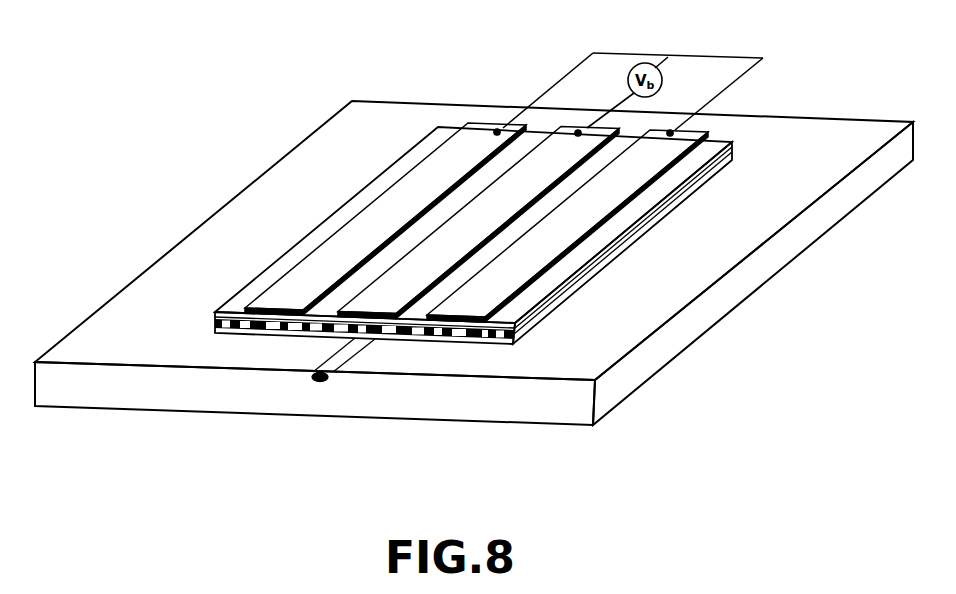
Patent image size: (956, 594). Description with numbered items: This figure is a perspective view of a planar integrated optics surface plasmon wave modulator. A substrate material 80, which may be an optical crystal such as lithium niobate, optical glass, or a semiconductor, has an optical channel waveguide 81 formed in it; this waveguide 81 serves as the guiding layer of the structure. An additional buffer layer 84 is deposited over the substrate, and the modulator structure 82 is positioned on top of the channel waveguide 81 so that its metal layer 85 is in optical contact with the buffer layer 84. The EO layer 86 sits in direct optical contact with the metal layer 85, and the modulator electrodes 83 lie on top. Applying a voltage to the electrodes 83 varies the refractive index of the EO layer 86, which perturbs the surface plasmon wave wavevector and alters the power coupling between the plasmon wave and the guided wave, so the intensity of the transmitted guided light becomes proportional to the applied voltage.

The substrate material 80 is at (116, 402).
The optical channel waveguide 81 is at (326, 378).
The modulator structure 82 is at (385, 141).
The modulator electrodes 83 is at (653, 130).
The buffer layer 84 is at (637, 237).
The metal layer 85 is at (737, 145).
The EO layer 86 is at (712, 137).